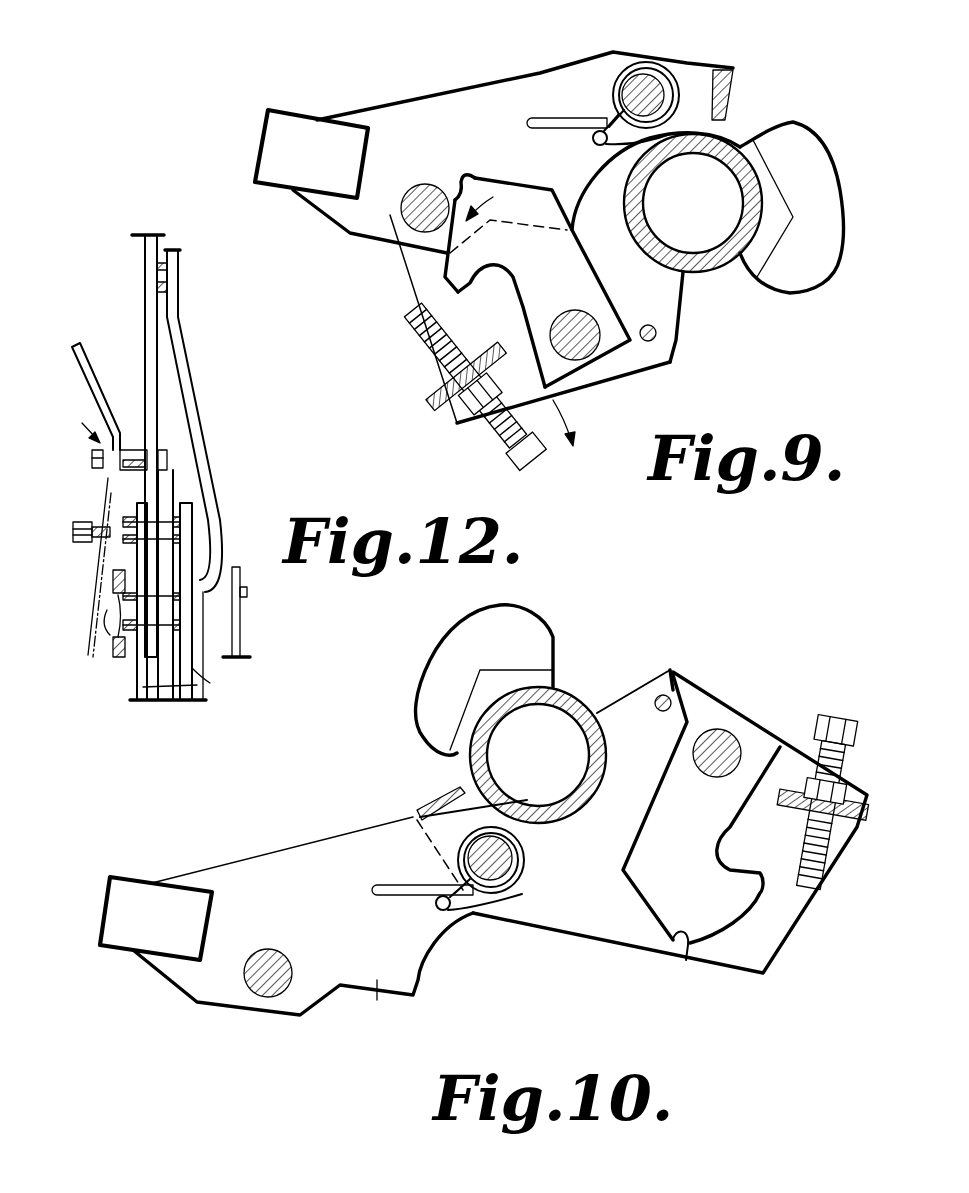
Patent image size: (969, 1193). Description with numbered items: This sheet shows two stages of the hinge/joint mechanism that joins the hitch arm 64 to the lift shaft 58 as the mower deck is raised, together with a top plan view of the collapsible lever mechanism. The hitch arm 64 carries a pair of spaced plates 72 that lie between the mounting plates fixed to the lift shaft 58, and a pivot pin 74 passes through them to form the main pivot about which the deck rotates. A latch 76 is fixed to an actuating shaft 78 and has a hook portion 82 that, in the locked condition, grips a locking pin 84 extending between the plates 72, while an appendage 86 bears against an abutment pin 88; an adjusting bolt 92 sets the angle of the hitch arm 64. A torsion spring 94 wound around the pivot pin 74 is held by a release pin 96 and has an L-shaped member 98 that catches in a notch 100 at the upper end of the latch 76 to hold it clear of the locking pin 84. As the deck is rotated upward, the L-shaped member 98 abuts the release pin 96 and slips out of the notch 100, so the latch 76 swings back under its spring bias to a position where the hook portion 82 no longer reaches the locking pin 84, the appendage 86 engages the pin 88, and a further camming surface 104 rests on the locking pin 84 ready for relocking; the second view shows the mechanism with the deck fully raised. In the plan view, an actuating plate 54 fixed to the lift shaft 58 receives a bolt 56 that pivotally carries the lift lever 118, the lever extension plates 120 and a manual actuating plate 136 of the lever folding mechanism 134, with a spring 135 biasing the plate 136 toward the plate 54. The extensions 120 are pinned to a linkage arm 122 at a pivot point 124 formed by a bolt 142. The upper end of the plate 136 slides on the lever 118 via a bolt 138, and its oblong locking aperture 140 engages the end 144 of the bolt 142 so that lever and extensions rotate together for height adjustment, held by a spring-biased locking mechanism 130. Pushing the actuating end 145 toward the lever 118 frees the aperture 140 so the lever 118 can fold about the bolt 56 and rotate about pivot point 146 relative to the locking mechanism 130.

In FIG. 12, the actuating plate 54 is at (173, 563).
In FIG. 12, the bolt 56 is at (80, 543).
In FIG. 9, the lift shaft 58 is at (732, 145).
In FIG. 10, the lift shaft 58 is at (577, 700).
In FIG. 9, the hitch arm 64 is at (306, 128).
In FIG. 10, the hitch arm 64 is at (124, 886).
In FIG. 9, the spaced plates 72 is at (447, 137).
In FIG. 10, the spaced plates 72 is at (377, 1000).
In FIG. 9, the pivot pin 74 is at (640, 80).
In FIG. 10, the pivot pin 74 is at (512, 862).
In FIG. 9, the latch 76 is at (562, 288).
In FIG. 10, the latch 76 is at (697, 898).
In FIG. 9, the actuating shaft 78 is at (578, 360).
In FIG. 10, the actuating shaft 78 is at (717, 773).
In FIG. 9, the hook portion 82 is at (498, 288).
In FIG. 10, the hook portion 82 is at (731, 870).
In FIG. 9, the locking pin 84 is at (416, 197).
In FIG. 10, the locking pin 84 is at (248, 993).
In FIG. 9, the appendage 86 is at (676, 348).
In FIG. 10, the appendage 86 is at (675, 686).
In FIG. 9, the abutment pin 88 is at (650, 325).
In FIG. 10, the abutment pin 88 is at (664, 712).
In FIG. 9, the adjusting bolt 92 is at (513, 460).
In FIG. 10, the adjusting bolt 92 is at (856, 727).
In FIG. 9, the torsion spring 94 is at (673, 80).
In FIG. 10, the torsion spring 94 is at (513, 897).
In FIG. 9, the release pin 96 is at (593, 140).
In FIG. 10, the release pin 96 is at (452, 913).
In FIG. 9, the L-shaped member 98 is at (536, 119).
In FIG. 9, the notch 100 is at (465, 178).
In FIG. 10, the notch 100 is at (682, 962).
In FIG. 9, the camming surface 104 is at (411, 290).
In FIG. 12, the lift lever 118 is at (145, 238).
In FIG. 12, the lever extension plates 120 is at (197, 685).
In FIG. 12, the linkage arm 122 is at (180, 617).
In FIG. 12, the pivot point 124 is at (187, 627).
In FIG. 12, the spring-biased locking mechanism 130 is at (203, 418).
In FIG. 12, the lever folding mechanism 134 is at (73, 418).
In FIG. 12, the spring 135 is at (97, 518).
In FIG. 12, the manual actuating plate 136 is at (110, 483).
In FIG. 12, the bolt 138 is at (127, 450).
In FIG. 12, the locking aperture 140 is at (122, 642).
In FIG. 12, the bolt 142 is at (107, 623).
In FIG. 12, the bolt end 144 is at (107, 598).
In FIG. 12, the actuating end 145 is at (77, 343).
In FIG. 12, the pivot point 146 is at (248, 593).